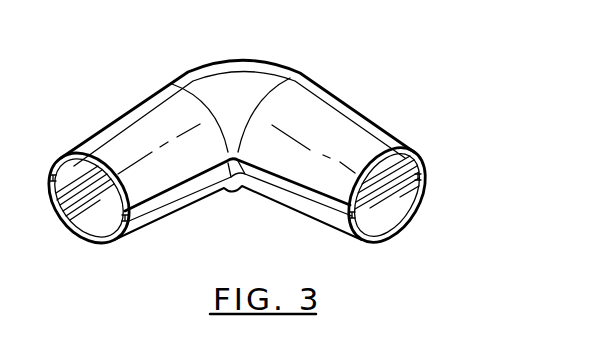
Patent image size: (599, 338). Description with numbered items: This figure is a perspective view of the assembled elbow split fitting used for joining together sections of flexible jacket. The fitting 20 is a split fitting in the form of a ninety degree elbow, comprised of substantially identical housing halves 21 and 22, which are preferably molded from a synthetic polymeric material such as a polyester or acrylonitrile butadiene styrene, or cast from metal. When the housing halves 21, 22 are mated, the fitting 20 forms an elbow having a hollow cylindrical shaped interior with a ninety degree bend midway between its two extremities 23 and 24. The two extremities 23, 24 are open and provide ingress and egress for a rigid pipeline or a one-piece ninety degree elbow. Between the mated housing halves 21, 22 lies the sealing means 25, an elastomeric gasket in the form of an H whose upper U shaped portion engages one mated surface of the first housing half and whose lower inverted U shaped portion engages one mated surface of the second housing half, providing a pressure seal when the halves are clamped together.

The fitting 20 is at (332, 86).
The housing half 21 is at (383, 217).
The housing half 22 is at (165, 99).
The extremity 23 is at (68, 230).
The extremity 24 is at (418, 201).
The sealing means 25 is at (420, 175).